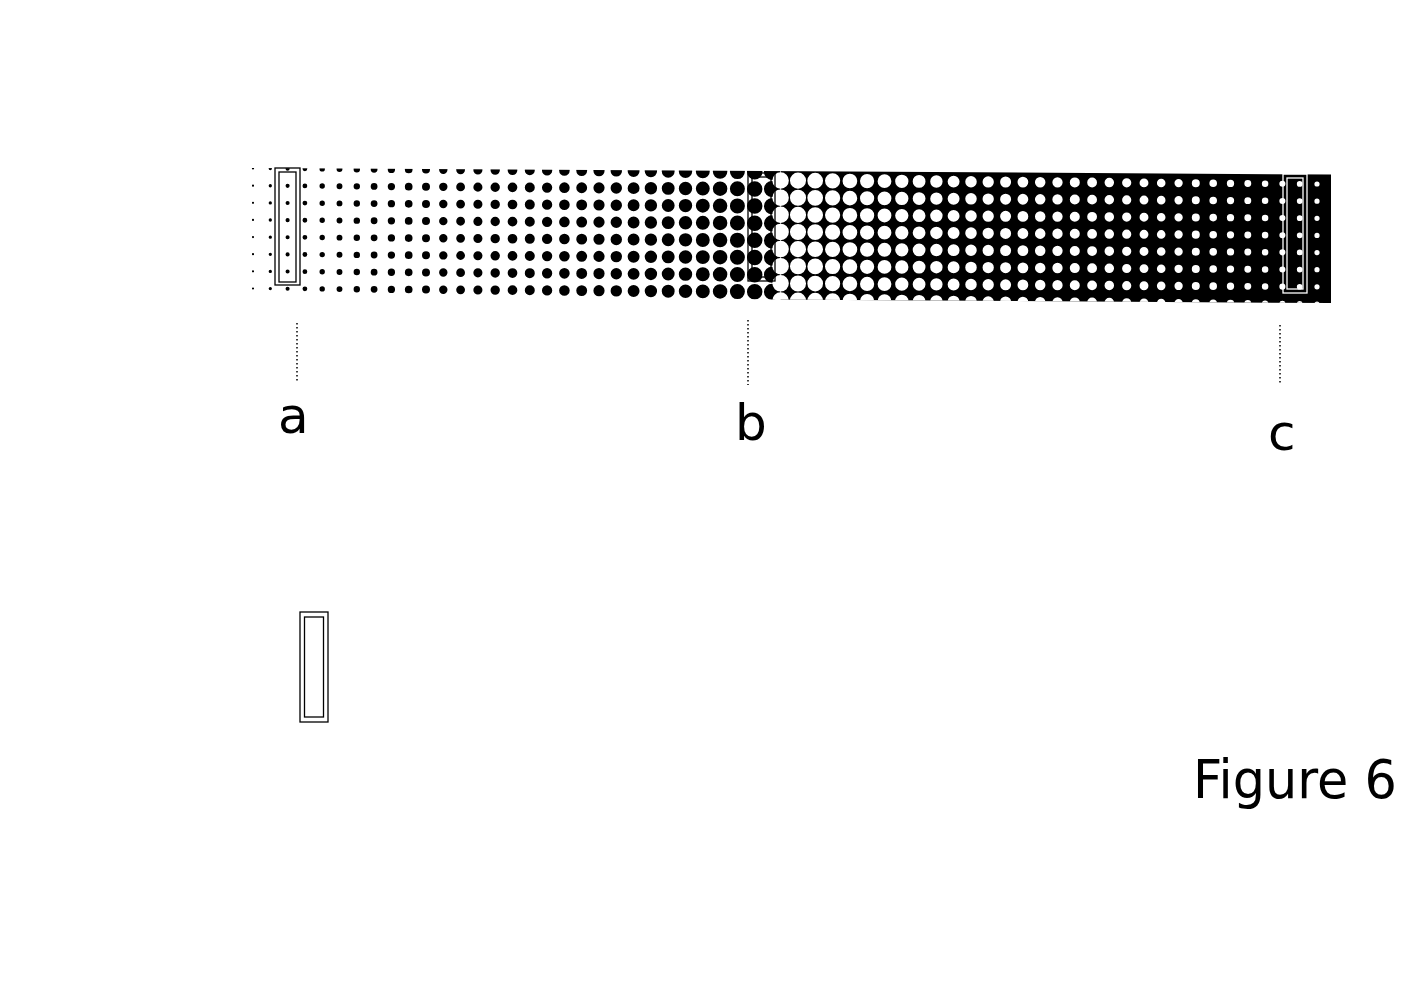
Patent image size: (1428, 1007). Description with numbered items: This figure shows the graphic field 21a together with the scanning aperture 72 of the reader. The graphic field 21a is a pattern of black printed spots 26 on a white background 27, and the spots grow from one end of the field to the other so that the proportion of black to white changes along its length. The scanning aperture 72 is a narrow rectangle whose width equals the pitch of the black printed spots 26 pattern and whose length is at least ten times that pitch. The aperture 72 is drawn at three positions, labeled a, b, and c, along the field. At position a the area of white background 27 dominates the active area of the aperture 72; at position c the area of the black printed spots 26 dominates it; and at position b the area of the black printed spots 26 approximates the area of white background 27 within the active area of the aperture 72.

The graphic field 21a is at (240, 261).
The white background 27 is at (417, 173).
The black printed spots 26 is at (623, 300).
The scanning aperture 72 is at (295, 168).